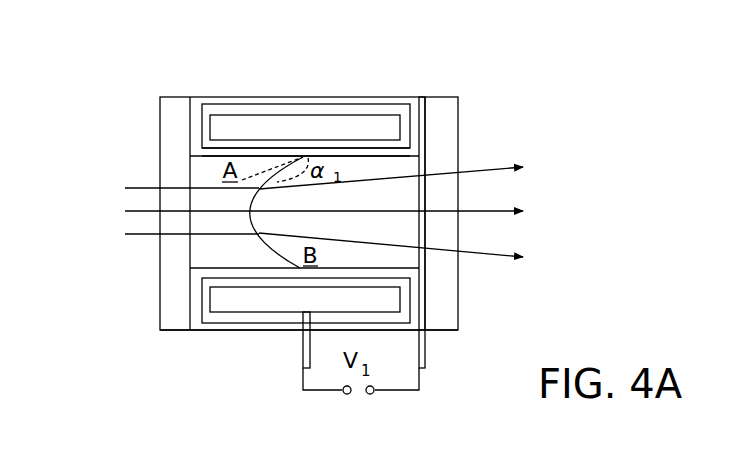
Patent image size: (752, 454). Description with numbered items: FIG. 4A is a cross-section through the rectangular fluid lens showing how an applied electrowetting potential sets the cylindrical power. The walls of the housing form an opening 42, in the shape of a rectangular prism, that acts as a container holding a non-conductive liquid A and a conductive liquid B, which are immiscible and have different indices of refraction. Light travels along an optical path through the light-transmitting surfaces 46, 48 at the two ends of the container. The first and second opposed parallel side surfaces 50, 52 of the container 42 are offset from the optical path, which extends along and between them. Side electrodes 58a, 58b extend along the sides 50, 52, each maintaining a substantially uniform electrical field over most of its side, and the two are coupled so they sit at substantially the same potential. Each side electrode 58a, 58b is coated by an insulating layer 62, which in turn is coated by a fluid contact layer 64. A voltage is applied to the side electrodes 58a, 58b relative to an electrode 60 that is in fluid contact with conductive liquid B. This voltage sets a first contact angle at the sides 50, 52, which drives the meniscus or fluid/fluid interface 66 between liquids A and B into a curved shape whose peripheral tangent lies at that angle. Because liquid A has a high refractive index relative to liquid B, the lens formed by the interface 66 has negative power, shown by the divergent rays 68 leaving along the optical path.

The opening 42 is at (131, 40).
The surface 46 is at (175, 115).
The surface 48 is at (442, 112).
The first side surface 50 is at (417, 55).
The second side surface 52 is at (196, 334).
The side electrode 58a is at (365, 122).
The side electrode 58b is at (237, 298).
The electrode 60 is at (420, 262).
The insulating layer 62 is at (238, 143).
The fluid contact layer 64 is at (283, 152).
The fluid/fluid interface 66 is at (273, 256).
The divergent rays 68 is at (520, 150).